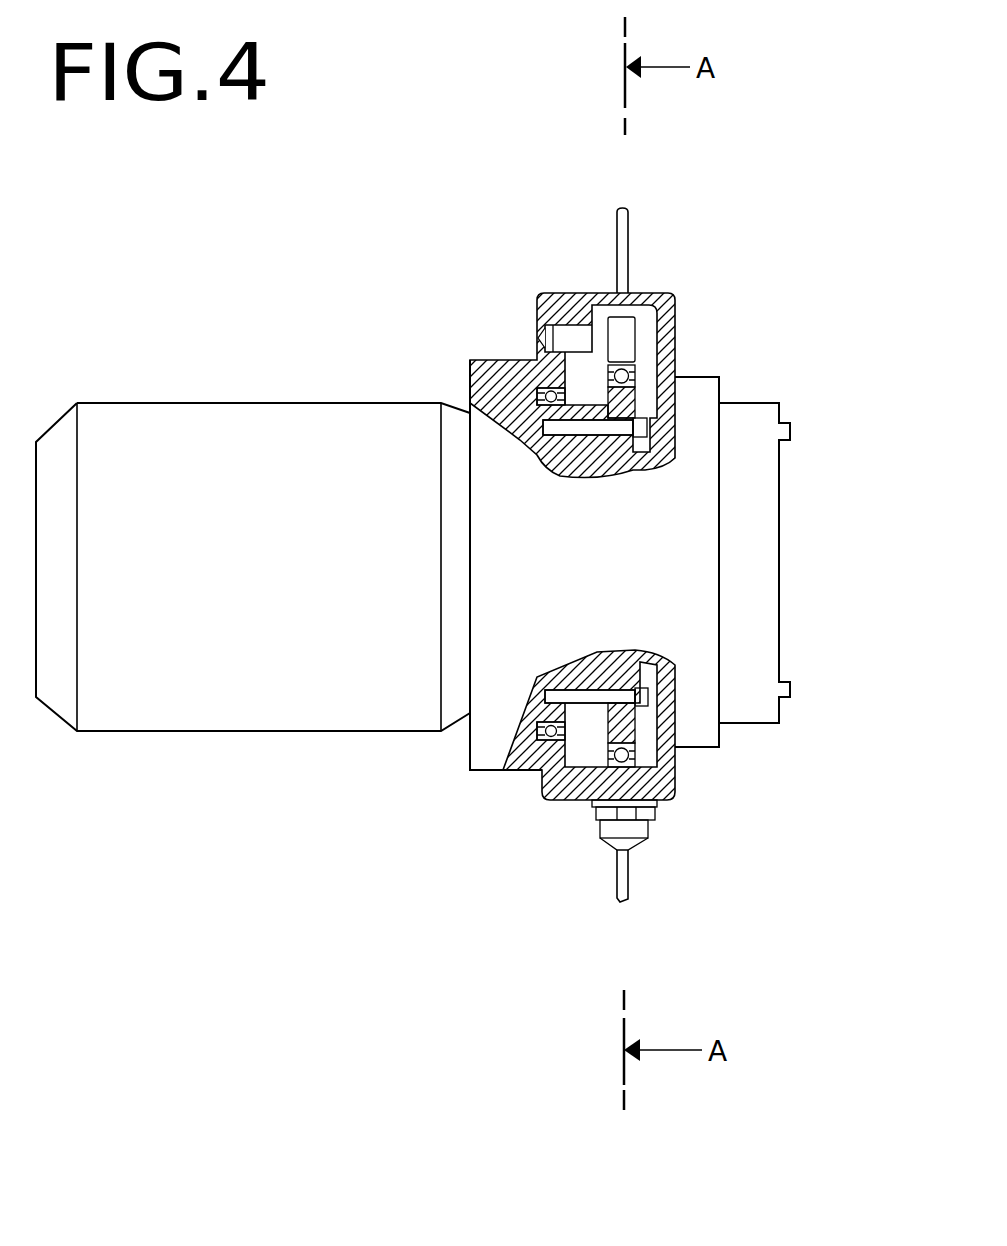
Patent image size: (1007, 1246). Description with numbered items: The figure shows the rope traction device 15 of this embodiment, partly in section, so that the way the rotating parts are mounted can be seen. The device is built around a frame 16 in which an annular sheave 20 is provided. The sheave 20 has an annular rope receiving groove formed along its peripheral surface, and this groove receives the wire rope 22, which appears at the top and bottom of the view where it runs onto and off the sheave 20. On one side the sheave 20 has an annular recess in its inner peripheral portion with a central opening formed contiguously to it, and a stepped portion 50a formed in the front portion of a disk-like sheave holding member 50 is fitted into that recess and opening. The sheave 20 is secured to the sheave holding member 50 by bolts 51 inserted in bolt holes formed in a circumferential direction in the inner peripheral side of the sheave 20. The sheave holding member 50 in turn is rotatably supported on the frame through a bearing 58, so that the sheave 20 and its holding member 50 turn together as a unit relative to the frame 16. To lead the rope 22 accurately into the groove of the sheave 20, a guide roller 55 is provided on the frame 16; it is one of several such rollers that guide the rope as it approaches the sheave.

The rope traction device 15 is at (718, 283).
The frame 16 is at (464, 318).
The sheave 20 is at (650, 730).
The wire rope 22 is at (628, 216).
The sheave holding member 50 is at (600, 655).
The stepped portion 50a is at (606, 455).
The bolt 51 is at (598, 690).
The guide roller 55 is at (630, 340).
The bearing 58 is at (555, 745).